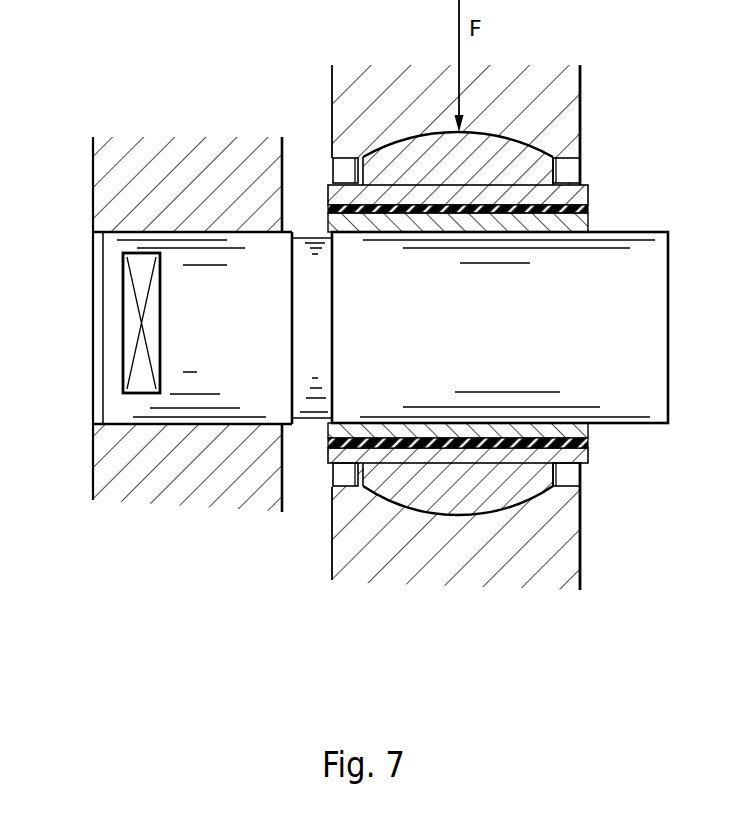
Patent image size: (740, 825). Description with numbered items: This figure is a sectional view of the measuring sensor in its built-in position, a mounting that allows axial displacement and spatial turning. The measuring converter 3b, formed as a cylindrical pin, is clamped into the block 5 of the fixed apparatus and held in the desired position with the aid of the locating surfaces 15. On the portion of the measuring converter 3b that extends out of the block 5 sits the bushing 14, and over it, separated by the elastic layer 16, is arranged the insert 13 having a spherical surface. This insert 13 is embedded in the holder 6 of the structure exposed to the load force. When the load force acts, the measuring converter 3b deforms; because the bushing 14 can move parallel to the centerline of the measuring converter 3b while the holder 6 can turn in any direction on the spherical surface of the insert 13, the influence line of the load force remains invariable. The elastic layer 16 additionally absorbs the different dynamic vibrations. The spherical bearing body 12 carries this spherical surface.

The measuring converter 3b is at (624, 406).
The block 5 is at (187, 165).
The holder 6 is at (567, 94).
The spherical bearing outer body 12 is at (418, 131).
The insert 13 is at (531, 140).
The bushing 14 is at (581, 223).
The locating surfaces 15 is at (128, 272).
The elastic layer 16 is at (584, 192).